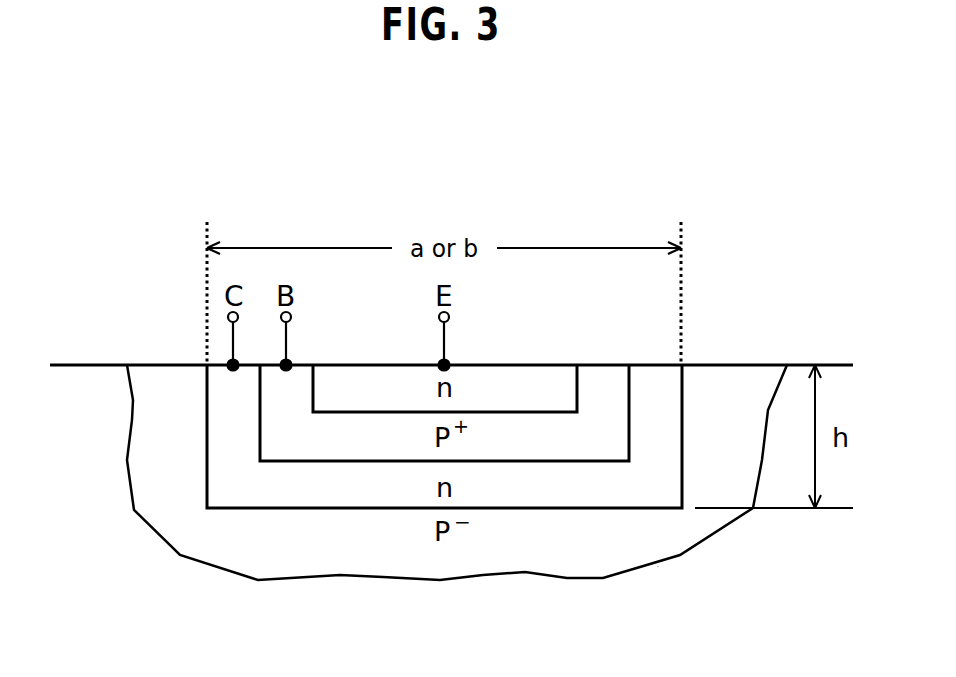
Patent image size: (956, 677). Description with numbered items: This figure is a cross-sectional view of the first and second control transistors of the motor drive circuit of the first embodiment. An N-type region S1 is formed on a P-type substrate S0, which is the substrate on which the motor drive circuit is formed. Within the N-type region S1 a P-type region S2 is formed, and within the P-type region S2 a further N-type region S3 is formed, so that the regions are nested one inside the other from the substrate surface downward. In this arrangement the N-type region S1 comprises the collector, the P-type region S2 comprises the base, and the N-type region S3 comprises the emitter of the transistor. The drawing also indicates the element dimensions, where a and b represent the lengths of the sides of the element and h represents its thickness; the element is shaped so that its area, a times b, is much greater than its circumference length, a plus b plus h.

The P-type substrate S0 is at (478, 565).
The N-type region S1 is at (652, 547).
The P-type region S2 is at (605, 393).
The N-type region S3 is at (522, 387).